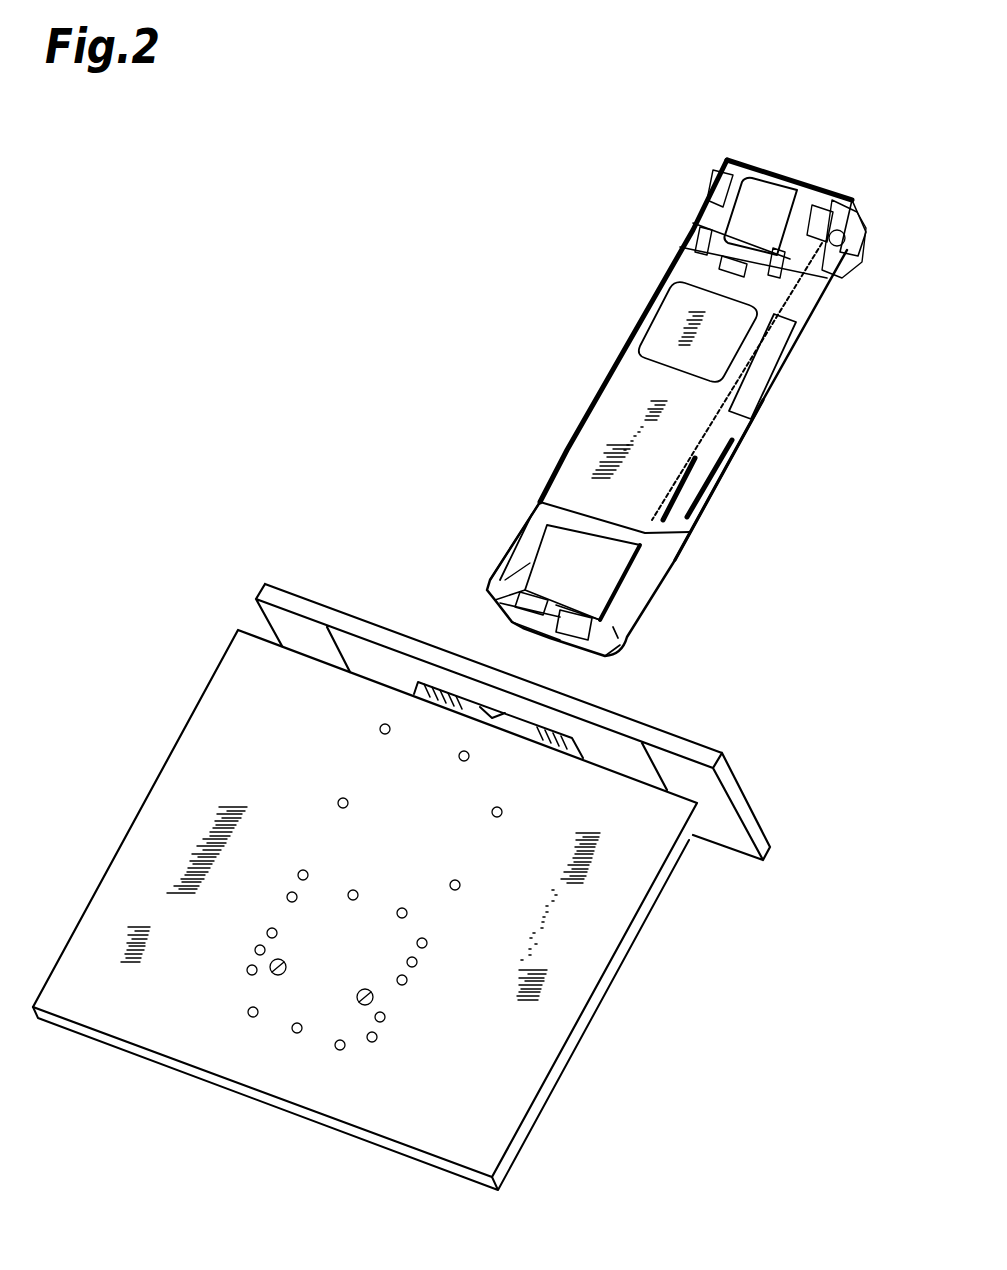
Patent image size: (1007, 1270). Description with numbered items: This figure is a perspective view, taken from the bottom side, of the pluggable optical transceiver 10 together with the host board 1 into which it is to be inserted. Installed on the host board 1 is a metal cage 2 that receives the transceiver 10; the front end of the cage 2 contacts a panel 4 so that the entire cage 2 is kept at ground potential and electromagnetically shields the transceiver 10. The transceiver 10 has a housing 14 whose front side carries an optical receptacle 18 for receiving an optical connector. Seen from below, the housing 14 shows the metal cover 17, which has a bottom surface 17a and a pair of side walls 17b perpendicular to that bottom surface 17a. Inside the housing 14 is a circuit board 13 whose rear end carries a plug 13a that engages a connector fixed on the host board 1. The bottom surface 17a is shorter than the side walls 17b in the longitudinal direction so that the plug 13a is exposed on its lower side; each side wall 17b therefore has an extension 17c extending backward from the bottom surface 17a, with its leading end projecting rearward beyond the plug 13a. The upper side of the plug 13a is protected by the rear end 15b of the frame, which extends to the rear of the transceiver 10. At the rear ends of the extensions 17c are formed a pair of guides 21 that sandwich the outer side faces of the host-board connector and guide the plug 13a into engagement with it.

The host board 1 is at (517, 1070).
The cage 2 is at (557, 723).
The panel 4 is at (380, 637).
The optical transceiver 10 is at (654, 378).
The circuit board 13 is at (579, 559).
The plug 13a is at (560, 612).
The housing 14 is at (654, 378).
The rear end of the frame 15b is at (697, 660).
The cover 17 is at (674, 440).
The bottom surface 17a is at (678, 434).
The side walls 17b is at (764, 376).
The extension 17c is at (533, 541).
The optical receptacle 18 is at (743, 178).
The guides 21 is at (505, 580).